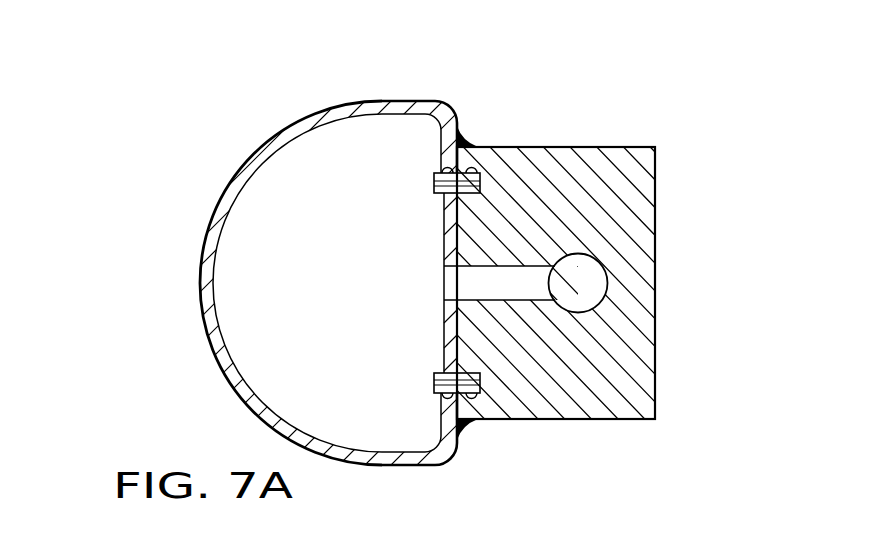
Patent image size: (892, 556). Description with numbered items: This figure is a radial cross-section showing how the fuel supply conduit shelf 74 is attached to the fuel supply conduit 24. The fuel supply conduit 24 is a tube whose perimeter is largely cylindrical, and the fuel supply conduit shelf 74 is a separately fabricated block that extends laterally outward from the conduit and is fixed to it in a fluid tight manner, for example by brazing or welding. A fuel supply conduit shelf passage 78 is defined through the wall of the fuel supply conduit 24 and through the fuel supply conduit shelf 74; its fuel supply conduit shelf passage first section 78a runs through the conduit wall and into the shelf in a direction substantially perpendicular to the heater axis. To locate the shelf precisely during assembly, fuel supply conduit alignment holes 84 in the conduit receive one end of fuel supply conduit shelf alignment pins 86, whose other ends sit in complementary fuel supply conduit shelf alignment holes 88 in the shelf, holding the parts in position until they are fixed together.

The fuel supply conduit 24 is at (282, 148).
The fuel supply conduit shelf 74 is at (640, 146).
The fuel supply conduit shelf passage 78 is at (535, 376).
The fuel supply conduit shelf passage first section 78a is at (522, 288).
The fuel supply conduit alignment hole 84 is at (446, 168).
The fuel supply conduit shelf alignment pin 86 is at (434, 173).
The fuel supply conduit shelf alignment hole 88 is at (471, 168).